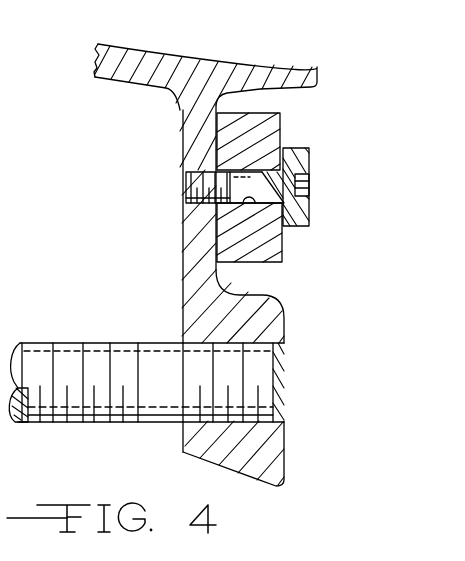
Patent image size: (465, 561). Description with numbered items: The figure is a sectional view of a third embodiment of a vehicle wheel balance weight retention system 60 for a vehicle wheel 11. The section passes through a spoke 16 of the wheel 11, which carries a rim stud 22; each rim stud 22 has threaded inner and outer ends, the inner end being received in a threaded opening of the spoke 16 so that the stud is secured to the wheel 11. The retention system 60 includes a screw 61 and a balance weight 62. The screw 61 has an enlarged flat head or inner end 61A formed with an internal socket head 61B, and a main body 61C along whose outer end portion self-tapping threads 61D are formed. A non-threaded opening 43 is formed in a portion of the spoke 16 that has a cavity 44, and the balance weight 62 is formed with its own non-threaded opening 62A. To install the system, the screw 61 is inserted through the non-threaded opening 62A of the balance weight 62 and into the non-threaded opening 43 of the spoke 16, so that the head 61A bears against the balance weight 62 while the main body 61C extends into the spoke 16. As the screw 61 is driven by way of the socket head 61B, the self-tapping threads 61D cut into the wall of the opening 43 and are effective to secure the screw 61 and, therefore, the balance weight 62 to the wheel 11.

The wheel 11 is at (142, 50).
The spoke 16 is at (130, 79).
The rim stud 22 is at (110, 423).
The non-threaded opening 43 is at (186, 178).
The cavity 44 is at (253, 277).
The vehicle wheel balance weight retention system 60 is at (328, 96).
The screw 61 is at (294, 146).
The enlarged flat head 61A is at (308, 212).
The internal socket head 61B is at (308, 180).
The main body 61C is at (240, 206).
The self-tapping threads 61D is at (183, 191).
The balance weight 62 is at (276, 262).
The non-threaded opening 62A is at (258, 206).